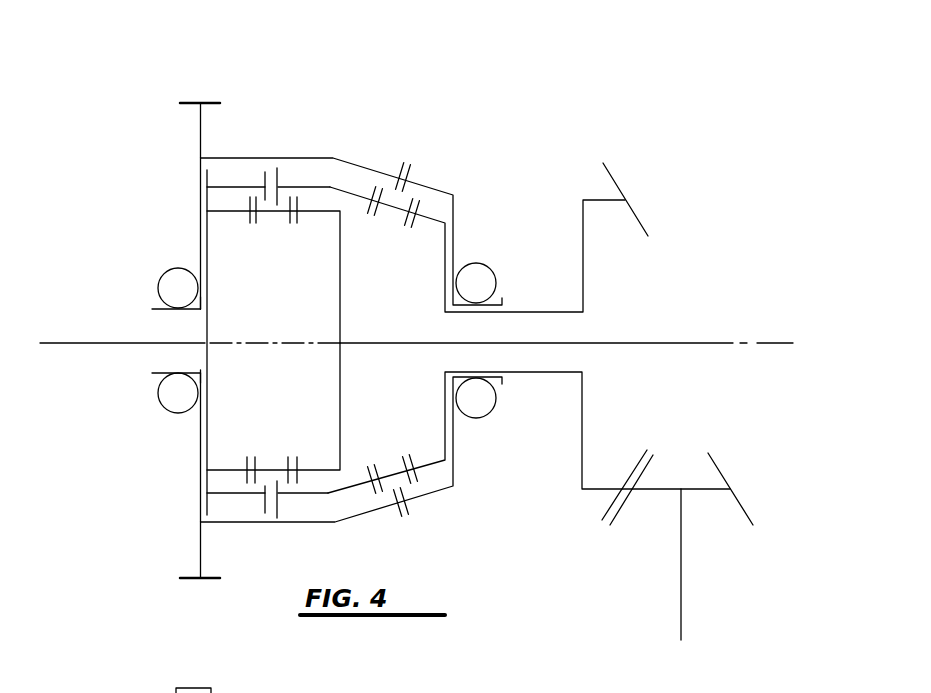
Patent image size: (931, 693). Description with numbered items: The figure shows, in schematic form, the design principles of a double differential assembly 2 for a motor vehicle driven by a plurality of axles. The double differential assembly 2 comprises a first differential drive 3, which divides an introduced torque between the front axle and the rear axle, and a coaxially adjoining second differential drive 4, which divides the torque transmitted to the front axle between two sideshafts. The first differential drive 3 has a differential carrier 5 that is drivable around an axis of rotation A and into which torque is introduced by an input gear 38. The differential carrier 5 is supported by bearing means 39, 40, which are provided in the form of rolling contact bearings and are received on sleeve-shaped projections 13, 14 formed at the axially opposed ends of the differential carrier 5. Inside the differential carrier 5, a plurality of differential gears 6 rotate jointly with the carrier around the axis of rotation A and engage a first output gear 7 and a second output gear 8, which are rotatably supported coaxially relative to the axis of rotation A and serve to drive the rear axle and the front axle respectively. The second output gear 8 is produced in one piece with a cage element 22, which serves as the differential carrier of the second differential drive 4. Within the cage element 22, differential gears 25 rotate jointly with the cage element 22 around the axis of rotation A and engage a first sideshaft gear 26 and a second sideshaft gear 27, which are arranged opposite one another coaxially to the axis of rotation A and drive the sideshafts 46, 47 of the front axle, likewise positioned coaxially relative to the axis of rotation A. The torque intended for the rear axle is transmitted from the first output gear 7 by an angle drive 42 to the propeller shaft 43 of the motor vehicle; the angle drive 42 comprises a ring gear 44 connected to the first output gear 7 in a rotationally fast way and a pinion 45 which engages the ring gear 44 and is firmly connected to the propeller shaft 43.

The double differential assembly 2 is at (374, 55).
The first differential drive 3 is at (410, 125).
The second differential drive 4 is at (265, 112).
The differential carrier 5 is at (327, 158).
The differential gears 6 is at (373, 216).
The first output gear 7 is at (428, 222).
The second output gear 8 is at (359, 192).
The sleeve-shaped projection 13 is at (500, 298).
The sleeve-shaped projection 14 is at (158, 308).
The cage element 22 is at (230, 187).
The differential gears 25 is at (260, 211).
The first sideshaft gear 26 is at (307, 211).
The second sideshaft gear 27 is at (230, 211).
The input gear 38 is at (190, 103).
The bearing means 39 is at (482, 273).
The bearing means 40 is at (175, 270).
The angle drive 42 is at (704, 205).
The propeller shaft 43 is at (682, 593).
The ring gear 44 is at (618, 182).
The pinion 45 is at (720, 470).
The sideshaft 46 is at (620, 343).
The sideshaft 47 is at (103, 343).
The axis of rotation A is at (765, 343).